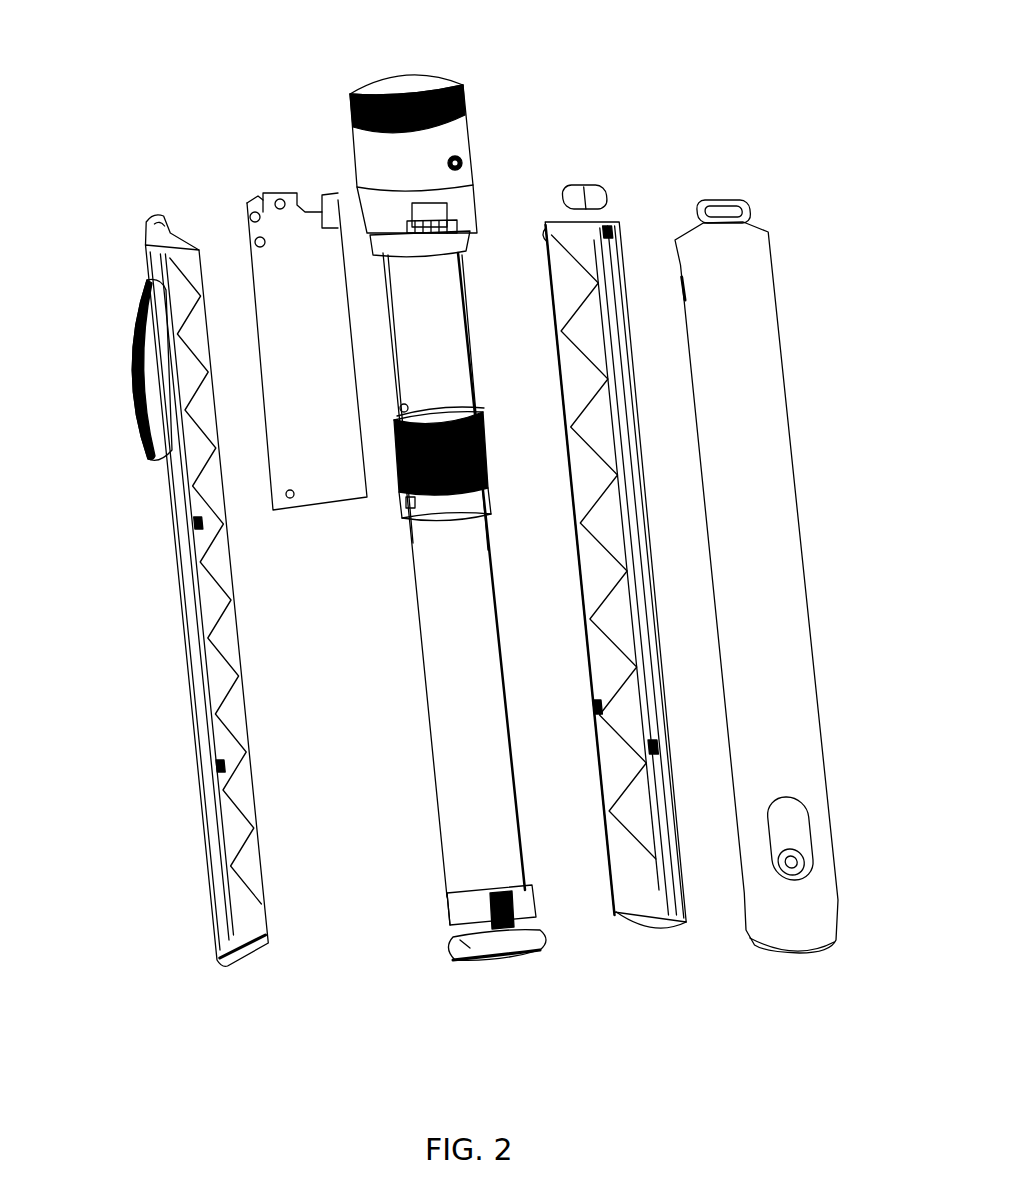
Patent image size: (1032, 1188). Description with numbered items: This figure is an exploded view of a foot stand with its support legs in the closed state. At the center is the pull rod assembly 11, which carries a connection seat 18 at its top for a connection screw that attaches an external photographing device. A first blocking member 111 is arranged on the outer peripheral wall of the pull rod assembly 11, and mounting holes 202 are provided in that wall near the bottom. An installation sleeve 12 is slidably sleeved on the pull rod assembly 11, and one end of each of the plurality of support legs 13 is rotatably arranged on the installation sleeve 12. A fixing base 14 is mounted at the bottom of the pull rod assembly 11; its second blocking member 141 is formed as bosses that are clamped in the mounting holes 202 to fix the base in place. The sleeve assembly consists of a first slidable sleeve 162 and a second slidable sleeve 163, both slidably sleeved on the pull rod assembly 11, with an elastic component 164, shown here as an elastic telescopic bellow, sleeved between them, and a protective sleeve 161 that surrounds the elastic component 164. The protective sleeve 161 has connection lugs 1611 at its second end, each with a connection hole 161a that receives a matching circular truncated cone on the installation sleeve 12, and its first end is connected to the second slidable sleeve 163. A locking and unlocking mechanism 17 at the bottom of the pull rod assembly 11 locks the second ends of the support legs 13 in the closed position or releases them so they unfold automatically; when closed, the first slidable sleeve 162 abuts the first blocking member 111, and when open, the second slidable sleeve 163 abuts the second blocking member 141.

The pull rod assembly 11 is at (440, 630).
The first blocking member 111 is at (406, 404).
The installation sleeve 12 is at (466, 159).
The support legs 13 is at (190, 622).
The fixing base 14 is at (493, 897).
The second blocking member 141 is at (457, 893).
The protective sleeve 161 is at (333, 493).
The connection lugs 1611 is at (290, 192).
The connection hole 161a is at (250, 212).
The first slidable sleeve 162 is at (452, 407).
The second slidable sleeve 163 is at (425, 519).
The elastic component 164 is at (481, 410).
The locking and unlocking mechanism 17 is at (450, 966).
The connection seat 18 is at (463, 82).
The mounting holes 202 is at (440, 903).